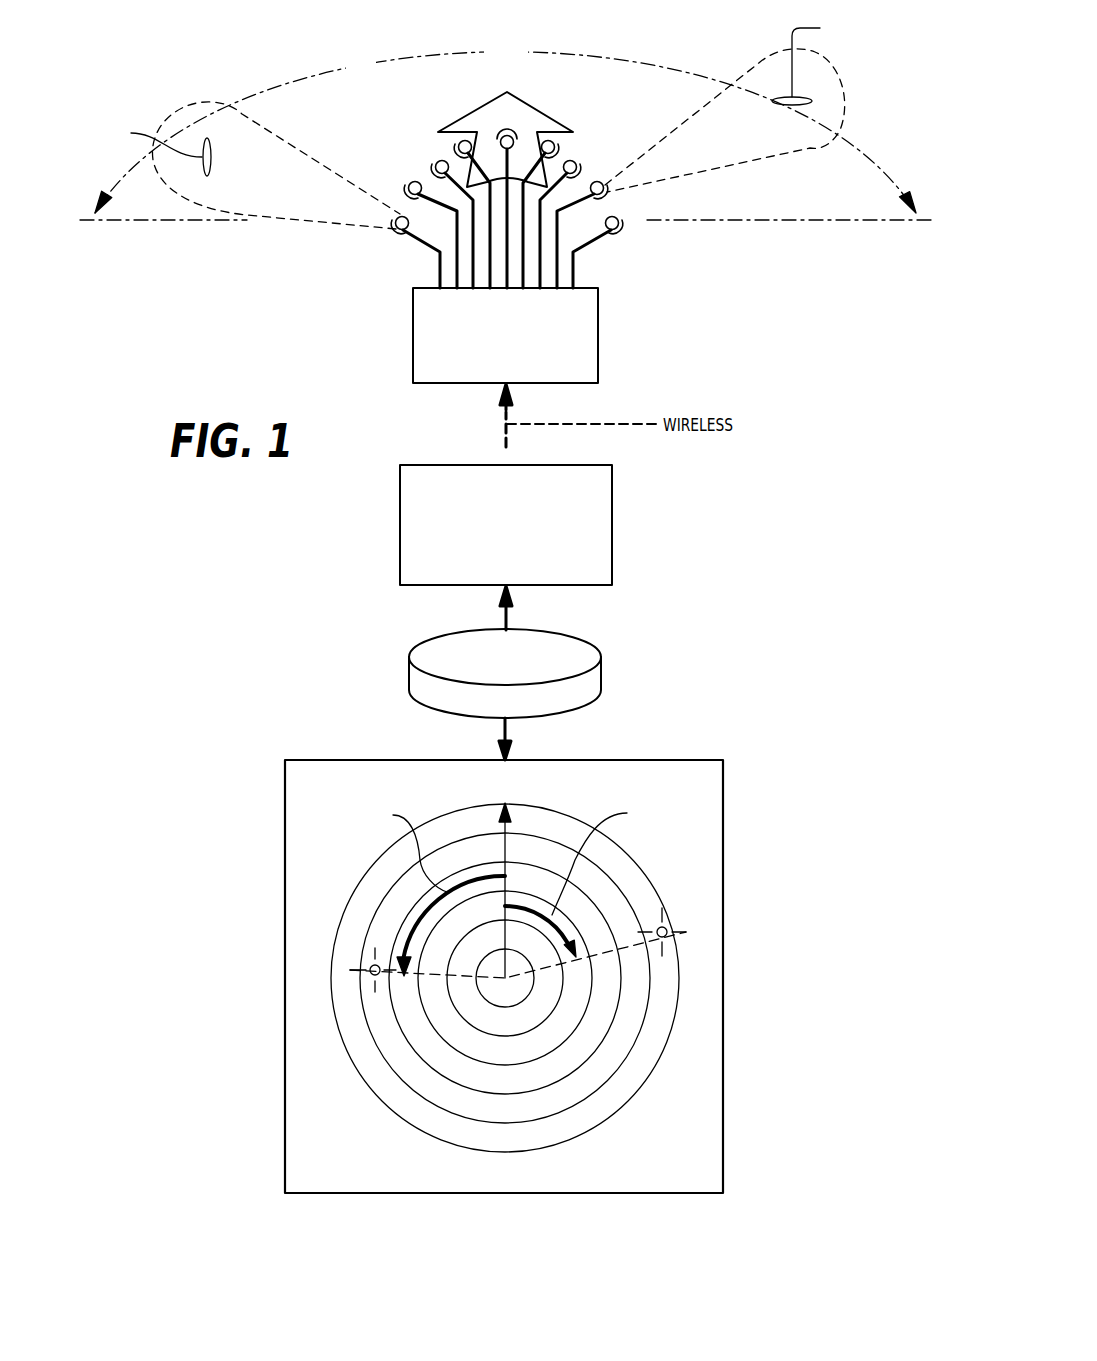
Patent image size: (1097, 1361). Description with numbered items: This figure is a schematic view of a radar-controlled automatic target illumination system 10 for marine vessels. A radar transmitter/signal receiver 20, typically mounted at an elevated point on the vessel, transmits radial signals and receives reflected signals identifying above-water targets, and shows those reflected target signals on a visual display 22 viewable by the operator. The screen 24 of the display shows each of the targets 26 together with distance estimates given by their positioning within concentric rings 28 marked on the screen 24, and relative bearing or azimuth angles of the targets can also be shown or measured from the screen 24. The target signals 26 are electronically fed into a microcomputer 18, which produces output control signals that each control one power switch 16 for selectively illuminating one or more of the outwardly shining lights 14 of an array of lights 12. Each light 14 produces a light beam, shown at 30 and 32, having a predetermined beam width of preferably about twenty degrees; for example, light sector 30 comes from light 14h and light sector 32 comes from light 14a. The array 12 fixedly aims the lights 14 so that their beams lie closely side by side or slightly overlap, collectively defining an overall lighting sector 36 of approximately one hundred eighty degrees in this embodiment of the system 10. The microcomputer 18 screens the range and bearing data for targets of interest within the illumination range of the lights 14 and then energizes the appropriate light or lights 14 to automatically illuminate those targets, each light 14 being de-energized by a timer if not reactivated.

The radar-controlled automatic target illumination system 10 is at (722, 281).
The array of lights 12 is at (601, 131).
The lights 14 is at (620, 223).
The light 14a is at (400, 232).
The light 14h is at (606, 184).
The power switch 16 is at (598, 303).
The microcomputer 18 is at (611, 490).
The radar transmitter/signal receiver 20 is at (601, 675).
The visual display 22 is at (723, 790).
The screen 24 is at (662, 890).
The targets 26 is at (667, 927).
The concentric rings 28 is at (558, 1003).
The light beam 30 is at (737, 170).
The light beam 32 is at (305, 222).
The overall lighting sector 36 is at (505, 126).